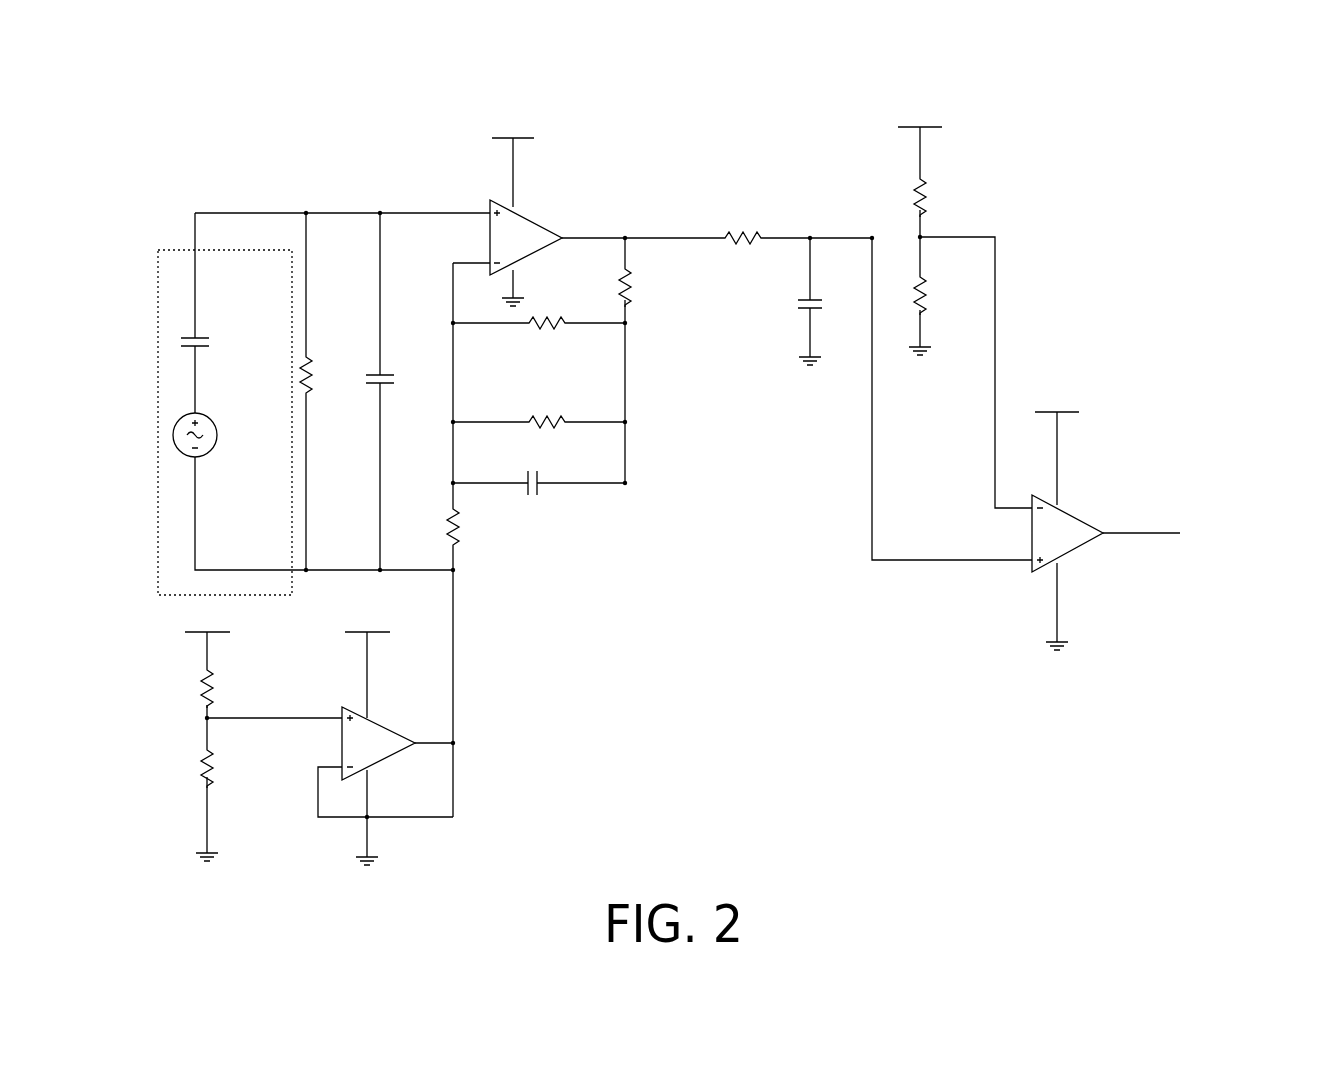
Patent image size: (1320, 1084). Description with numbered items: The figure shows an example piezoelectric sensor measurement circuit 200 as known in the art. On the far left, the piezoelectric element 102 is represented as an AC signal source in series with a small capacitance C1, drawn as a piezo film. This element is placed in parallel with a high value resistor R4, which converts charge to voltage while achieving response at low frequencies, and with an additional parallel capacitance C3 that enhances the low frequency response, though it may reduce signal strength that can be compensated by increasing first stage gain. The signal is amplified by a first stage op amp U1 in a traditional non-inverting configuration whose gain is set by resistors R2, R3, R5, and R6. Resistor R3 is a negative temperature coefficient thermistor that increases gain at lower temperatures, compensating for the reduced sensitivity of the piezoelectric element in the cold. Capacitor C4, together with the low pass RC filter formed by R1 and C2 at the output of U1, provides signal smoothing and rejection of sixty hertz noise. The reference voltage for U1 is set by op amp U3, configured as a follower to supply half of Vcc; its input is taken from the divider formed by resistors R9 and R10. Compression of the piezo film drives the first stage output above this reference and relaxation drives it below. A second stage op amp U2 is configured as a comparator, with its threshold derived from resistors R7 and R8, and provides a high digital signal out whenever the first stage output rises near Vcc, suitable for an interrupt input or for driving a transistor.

The piezoelectric film sensor 102 is at (162, 238).
The piezoelectric sensor measurement circuit 200 is at (721, 128).
The first stage op amp U1 is at (521, 213).
The op amp U2 is at (1073, 522).
The op amp U3 is at (374, 739).
The resistor R1 is at (743, 239).
The resistor R2 is at (646, 282).
The negative temperature coefficient thermistor R3 is at (539, 338).
The high value resistor R4 is at (323, 391).
The resistor R5 is at (539, 424).
The resistor R6 is at (473, 525).
The resistor R7 33k ohm R7 is at (941, 191).
The resistor R8 1M ohm R8 is at (936, 308).
The resistor R9 1M ohm R9 is at (226, 682).
The resistor R10 1M ohm R10 is at (223, 799).
The capacitor C1 60pF C1 is at (214, 334).
The capacitor C2 is at (829, 301).
The parallel capacitance C3 is at (404, 391).
The capacitor C4 is at (539, 486).